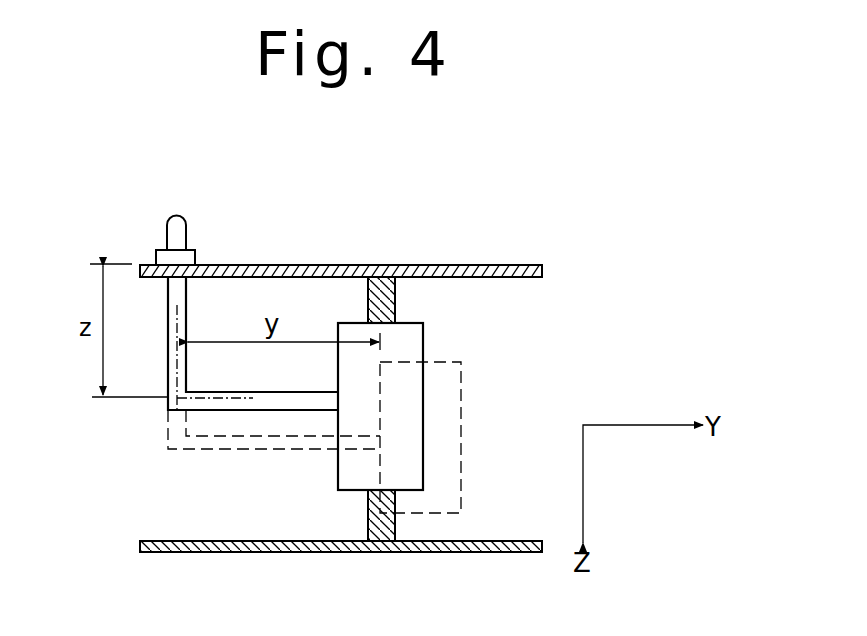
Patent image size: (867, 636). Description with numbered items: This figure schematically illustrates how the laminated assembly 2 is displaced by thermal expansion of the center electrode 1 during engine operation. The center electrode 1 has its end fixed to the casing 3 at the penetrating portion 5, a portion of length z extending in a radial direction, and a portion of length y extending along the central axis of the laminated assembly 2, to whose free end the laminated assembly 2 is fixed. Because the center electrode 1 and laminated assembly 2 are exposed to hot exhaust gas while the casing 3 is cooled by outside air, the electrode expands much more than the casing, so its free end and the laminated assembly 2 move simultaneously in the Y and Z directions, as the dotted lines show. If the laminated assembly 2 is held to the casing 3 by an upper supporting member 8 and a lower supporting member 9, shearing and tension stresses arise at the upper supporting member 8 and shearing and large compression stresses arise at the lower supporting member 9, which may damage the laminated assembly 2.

The center electrode 1 is at (178, 300).
The laminated assembly 2 is at (398, 335).
The casing 3 is at (490, 268).
The penetrating portion 5 is at (157, 255).
The upper supporting member 8 is at (370, 306).
The lower supporting member 9 is at (370, 503).